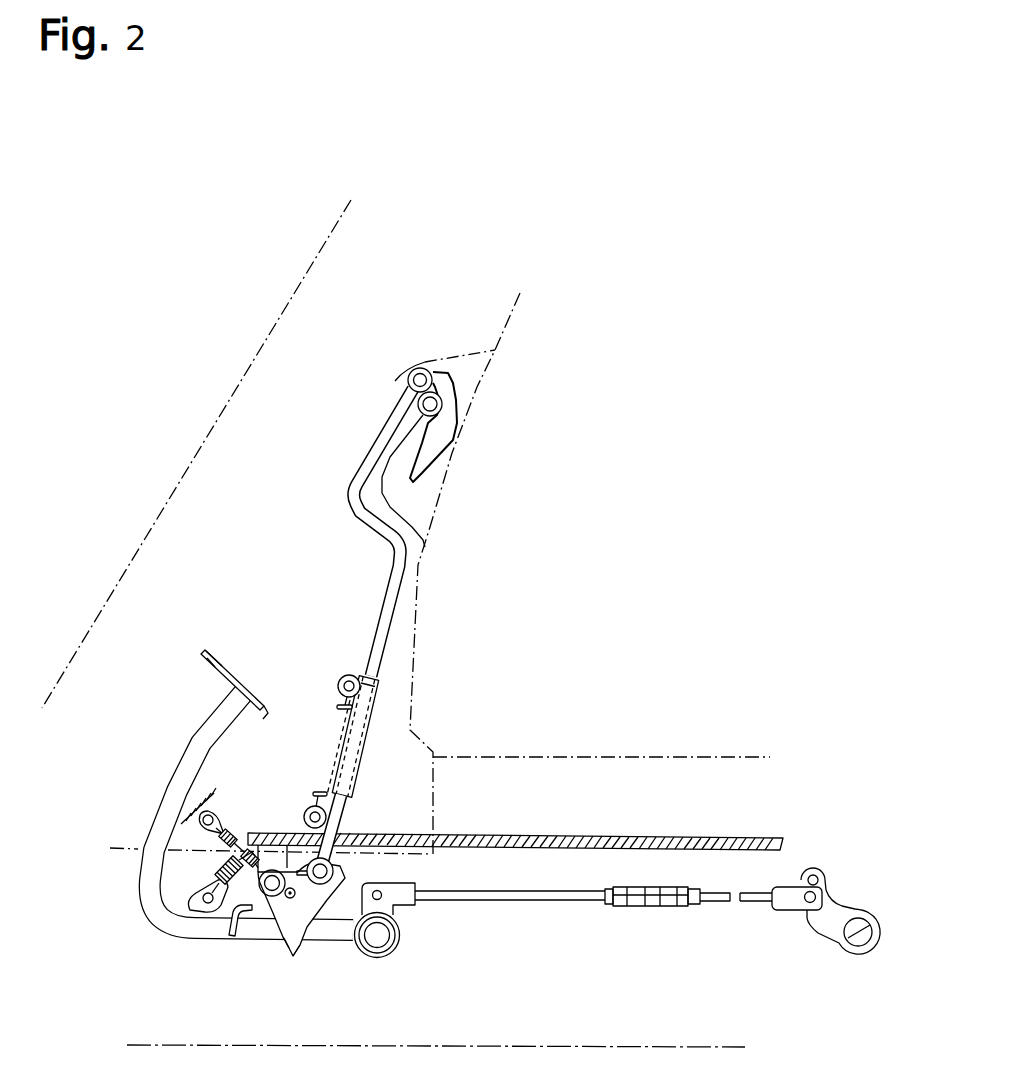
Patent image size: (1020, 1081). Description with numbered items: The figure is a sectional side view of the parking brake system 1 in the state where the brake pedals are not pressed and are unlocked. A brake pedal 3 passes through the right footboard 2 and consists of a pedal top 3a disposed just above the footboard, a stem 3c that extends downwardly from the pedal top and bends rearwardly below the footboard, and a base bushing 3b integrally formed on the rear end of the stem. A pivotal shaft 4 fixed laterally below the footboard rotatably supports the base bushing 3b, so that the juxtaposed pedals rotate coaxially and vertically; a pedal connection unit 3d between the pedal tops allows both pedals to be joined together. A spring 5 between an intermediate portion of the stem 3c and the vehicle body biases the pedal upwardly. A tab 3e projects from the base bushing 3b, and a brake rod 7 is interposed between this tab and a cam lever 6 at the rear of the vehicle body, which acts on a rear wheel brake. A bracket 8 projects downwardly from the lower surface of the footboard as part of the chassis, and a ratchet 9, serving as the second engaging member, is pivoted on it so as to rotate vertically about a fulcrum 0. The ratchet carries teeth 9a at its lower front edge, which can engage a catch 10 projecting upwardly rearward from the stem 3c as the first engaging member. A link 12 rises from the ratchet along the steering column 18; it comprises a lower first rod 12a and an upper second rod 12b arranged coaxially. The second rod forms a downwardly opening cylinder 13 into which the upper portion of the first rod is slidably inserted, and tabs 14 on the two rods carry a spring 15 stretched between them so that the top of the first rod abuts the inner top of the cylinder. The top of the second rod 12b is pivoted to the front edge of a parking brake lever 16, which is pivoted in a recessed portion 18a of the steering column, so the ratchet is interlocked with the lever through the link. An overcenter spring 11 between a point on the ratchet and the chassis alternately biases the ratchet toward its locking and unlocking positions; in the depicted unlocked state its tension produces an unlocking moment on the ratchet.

The parking brake system 1 is at (163, 567).
The right footboard 2 is at (568, 833).
The brake pedal 3 is at (265, 819).
The pedal top 3a is at (245, 700).
The base bushing 3b is at (395, 973).
The stem 3c is at (187, 753).
The pedal connection unit 3d is at (195, 655).
The tab 3e is at (393, 908).
The pivotal shaft 4 is at (390, 943).
The spring 5 is at (220, 870).
The cam lever 6 is at (820, 868).
The brake rod 7 is at (532, 900).
The bracket 8 is at (298, 850).
The ratchet 9 is at (301, 951).
The teeth 9a is at (287, 957).
The catch 10 is at (253, 918).
The overcenter spring 11 is at (240, 843).
The link 12 is at (409, 636).
The first rod 12a is at (347, 817).
The second rod 12b is at (382, 440).
The cylinder 13 is at (380, 692).
The tabs 14 is at (343, 677).
The spring 15 is at (331, 744).
The parking brake lever 16 is at (437, 455).
The steering column 18 is at (475, 574).
The recessed portion 18a is at (470, 380).
The fulcrum 0 is at (252, 852).